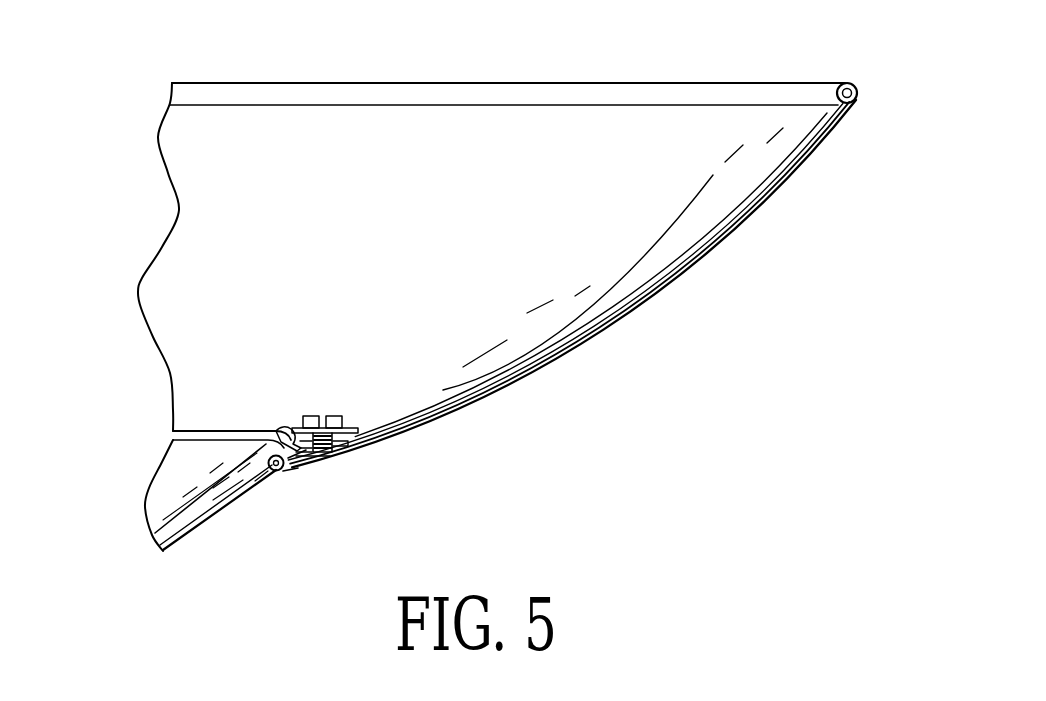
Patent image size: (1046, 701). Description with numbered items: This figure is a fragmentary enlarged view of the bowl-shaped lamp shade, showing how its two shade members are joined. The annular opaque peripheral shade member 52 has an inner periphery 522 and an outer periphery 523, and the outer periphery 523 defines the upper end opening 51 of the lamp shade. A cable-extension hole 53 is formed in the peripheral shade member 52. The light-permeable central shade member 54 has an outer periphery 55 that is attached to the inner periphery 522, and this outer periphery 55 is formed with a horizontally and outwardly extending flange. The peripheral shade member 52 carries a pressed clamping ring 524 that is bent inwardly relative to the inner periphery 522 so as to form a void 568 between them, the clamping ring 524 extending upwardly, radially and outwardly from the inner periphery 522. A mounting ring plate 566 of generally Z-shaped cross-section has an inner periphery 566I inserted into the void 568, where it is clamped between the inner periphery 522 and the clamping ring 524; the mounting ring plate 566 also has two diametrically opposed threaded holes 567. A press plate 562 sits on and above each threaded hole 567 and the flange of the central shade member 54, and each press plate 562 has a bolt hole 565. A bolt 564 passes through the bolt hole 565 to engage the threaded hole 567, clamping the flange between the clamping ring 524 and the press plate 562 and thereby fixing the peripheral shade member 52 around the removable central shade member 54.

The upper end opening 51 is at (302, 130).
The outer periphery 523 is at (858, 82).
The peripheral shade member 52 is at (610, 323).
The cable-extension hole 53 is at (483, 397).
The outer periphery 55 is at (268, 428).
The press plate 562 is at (286, 422).
The bolt 564 is at (337, 418).
The bolt hole 565 is at (347, 418).
The mounting ring plate 566 is at (325, 446).
The threaded hole 567 is at (315, 449).
The inner periphery of mounting ring plate 566I is at (300, 453).
The clamping ring 524 is at (300, 463).
The inner periphery 522 is at (262, 472).
The void 568 is at (290, 477).
The central shade member 54 is at (183, 527).